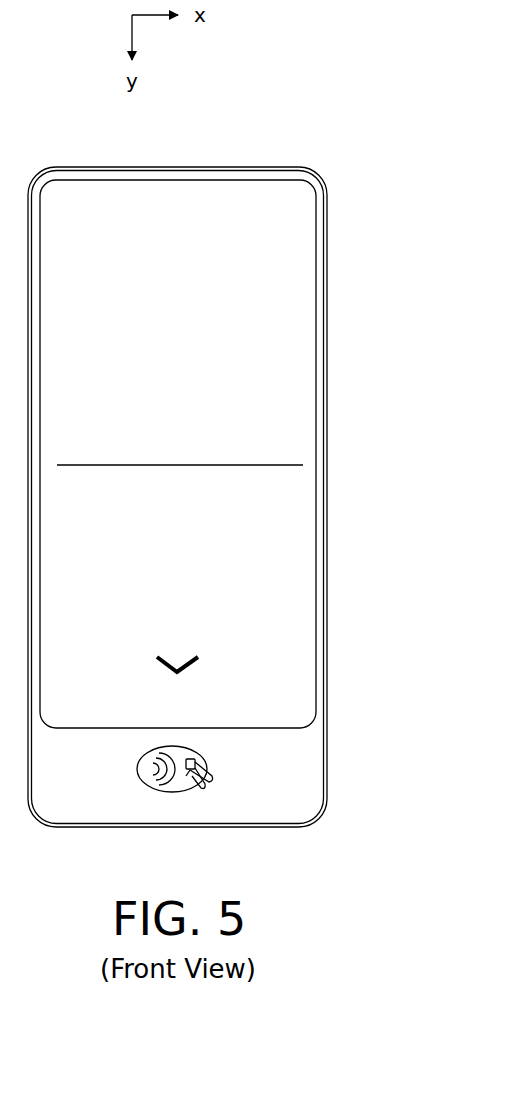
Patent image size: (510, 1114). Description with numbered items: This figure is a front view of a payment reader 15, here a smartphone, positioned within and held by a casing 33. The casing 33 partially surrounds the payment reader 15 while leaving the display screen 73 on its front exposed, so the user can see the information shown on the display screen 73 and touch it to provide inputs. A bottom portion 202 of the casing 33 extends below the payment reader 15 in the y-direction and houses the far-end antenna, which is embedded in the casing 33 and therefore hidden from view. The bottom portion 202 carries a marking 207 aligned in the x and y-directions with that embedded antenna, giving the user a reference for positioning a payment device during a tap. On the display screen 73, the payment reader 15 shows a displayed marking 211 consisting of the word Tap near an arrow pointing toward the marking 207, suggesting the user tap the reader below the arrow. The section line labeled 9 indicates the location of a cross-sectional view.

The section line 9- 9 is at (178, 167).
The payment reader 15 is at (262, 181).
The casing 33 is at (327, 240).
The display screen 73 is at (312, 494).
The bottom portion 202 is at (310, 777).
The marking 207 is at (222, 753).
The displayed marking 211 is at (238, 657).